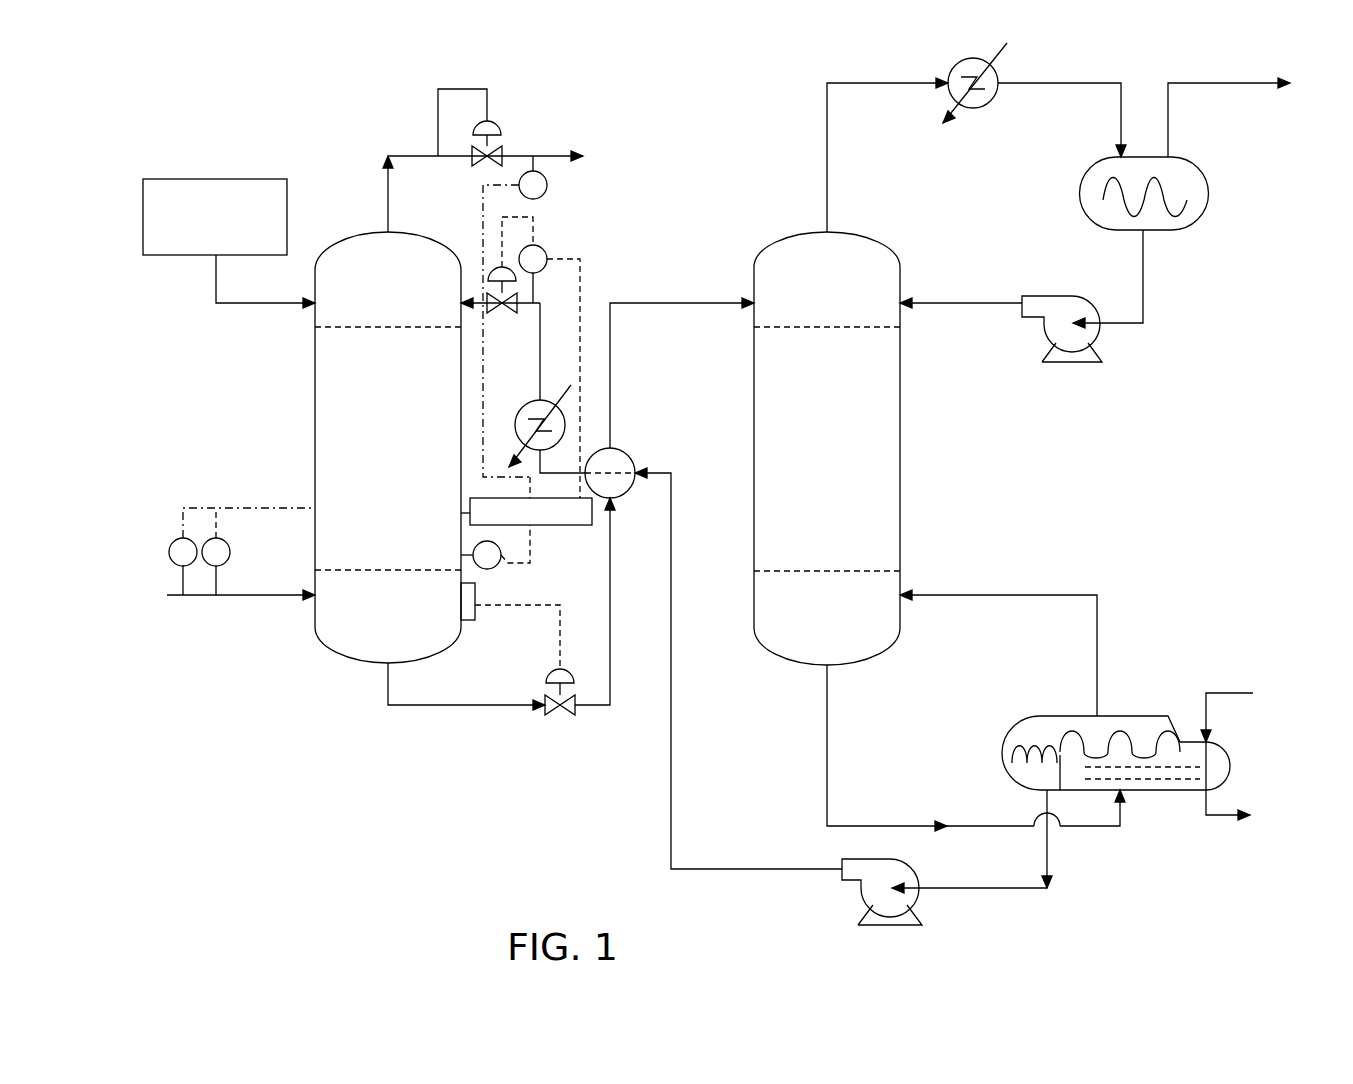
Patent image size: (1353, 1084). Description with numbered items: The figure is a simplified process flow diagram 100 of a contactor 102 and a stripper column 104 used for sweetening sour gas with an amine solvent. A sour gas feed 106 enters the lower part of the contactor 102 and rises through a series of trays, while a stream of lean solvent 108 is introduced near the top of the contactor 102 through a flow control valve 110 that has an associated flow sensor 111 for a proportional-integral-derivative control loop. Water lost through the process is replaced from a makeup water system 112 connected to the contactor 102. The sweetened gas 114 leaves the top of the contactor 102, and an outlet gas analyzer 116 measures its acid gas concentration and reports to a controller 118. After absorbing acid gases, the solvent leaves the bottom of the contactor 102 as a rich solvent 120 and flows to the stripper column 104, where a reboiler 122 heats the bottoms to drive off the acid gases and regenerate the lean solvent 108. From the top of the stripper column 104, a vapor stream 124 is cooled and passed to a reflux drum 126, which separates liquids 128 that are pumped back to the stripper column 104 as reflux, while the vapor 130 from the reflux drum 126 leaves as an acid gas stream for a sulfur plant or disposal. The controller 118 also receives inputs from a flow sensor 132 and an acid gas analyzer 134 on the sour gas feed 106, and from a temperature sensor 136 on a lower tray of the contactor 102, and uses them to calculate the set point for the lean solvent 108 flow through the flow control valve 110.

The simplified process flow diagram 100 is at (580, 913).
The contactor 102 is at (315, 365).
The stripper column 104 is at (754, 363).
The sour gas feed 106 is at (246, 597).
The lean solvent 108 is at (714, 871).
The flow control valve 110 is at (500, 313).
The flow sensor 111 is at (545, 250).
The makeup water system 112 is at (187, 179).
The sweetened gas 114 is at (410, 156).
The outlet gas analyzer 116 is at (545, 193).
The controller 118 is at (585, 526).
The rich solvent 120 is at (447, 708).
The reboiler 122 is at (1120, 716).
The vapor stream 124 is at (860, 83).
The reflux drum 126 is at (1205, 210).
The liquids 128 is at (1143, 295).
The vapor 130 is at (1230, 88).
The flow sensor 132 is at (228, 541).
The acid gas analyzer 134 is at (172, 543).
The temperature sensor 136 is at (475, 547).